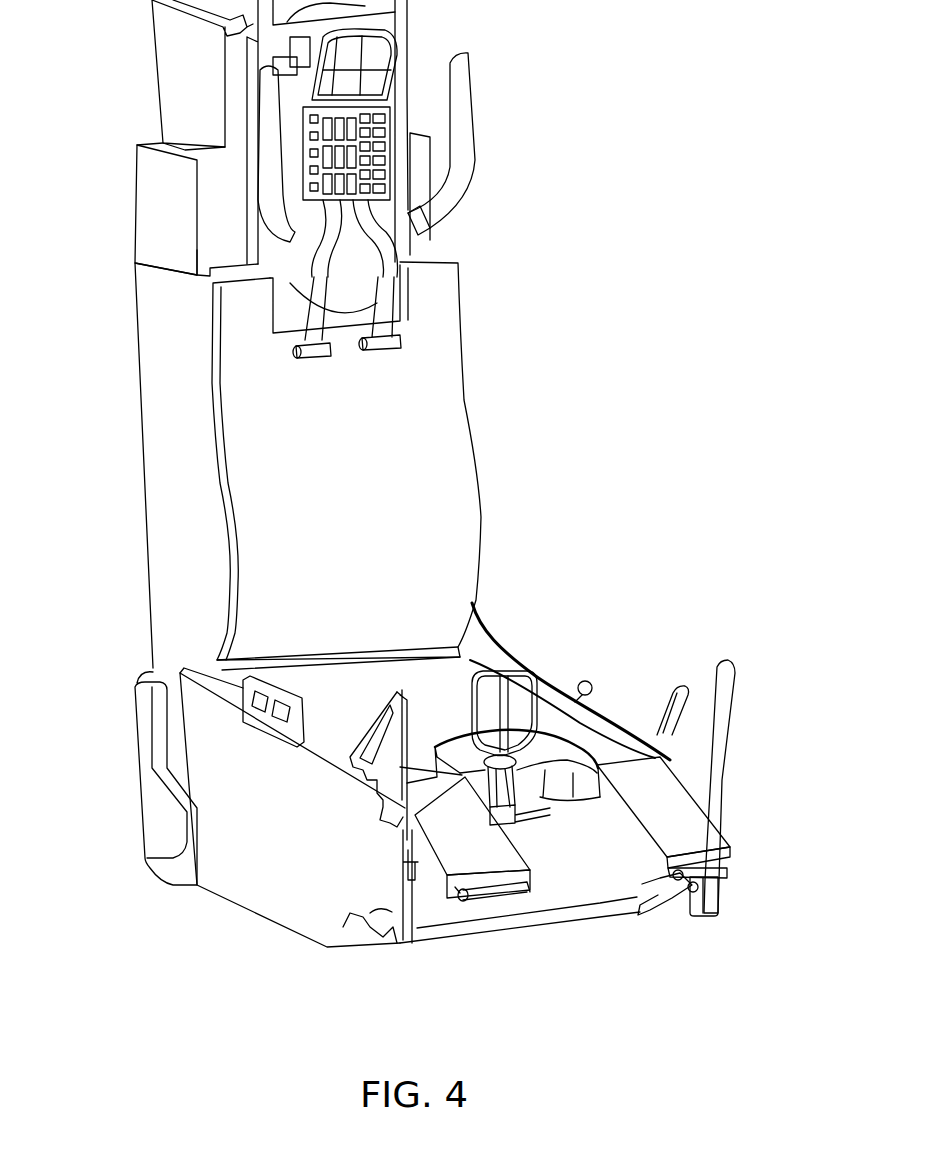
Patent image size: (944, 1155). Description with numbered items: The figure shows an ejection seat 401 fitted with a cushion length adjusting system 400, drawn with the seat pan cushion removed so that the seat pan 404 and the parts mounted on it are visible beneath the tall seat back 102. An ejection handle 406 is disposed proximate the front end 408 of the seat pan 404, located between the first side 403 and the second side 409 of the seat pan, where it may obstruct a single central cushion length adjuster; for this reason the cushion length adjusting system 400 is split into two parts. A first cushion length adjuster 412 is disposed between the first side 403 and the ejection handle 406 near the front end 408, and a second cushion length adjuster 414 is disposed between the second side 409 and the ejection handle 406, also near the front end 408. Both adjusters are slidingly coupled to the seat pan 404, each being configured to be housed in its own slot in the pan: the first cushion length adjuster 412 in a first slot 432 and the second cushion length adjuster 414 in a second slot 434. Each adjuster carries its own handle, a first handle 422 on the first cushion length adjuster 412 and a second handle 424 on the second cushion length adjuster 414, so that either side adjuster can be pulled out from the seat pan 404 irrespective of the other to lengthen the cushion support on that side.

The seat back 102 is at (178, 459).
The cushion length adjusting system 400 is at (740, 801).
The ejection seat 401 is at (577, 289).
The first side 403 is at (300, 858).
The seat pan 404 is at (452, 727).
The ejection handle 406 is at (537, 690).
The front end 408 is at (518, 763).
The second side 409 is at (523, 668).
The first cushion length adjuster 412 is at (477, 843).
The second cushion length adjuster 414 is at (695, 835).
The first handle 422 is at (491, 888).
The second handle 424 is at (683, 897).
The first slot 432 is at (428, 780).
The second slot 434 is at (655, 763).